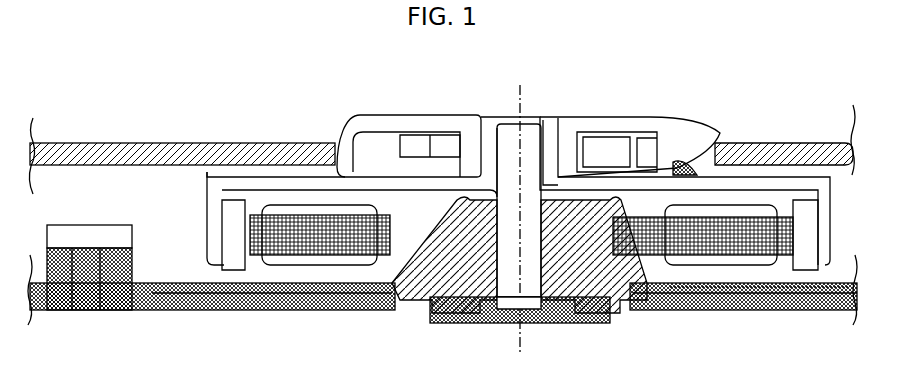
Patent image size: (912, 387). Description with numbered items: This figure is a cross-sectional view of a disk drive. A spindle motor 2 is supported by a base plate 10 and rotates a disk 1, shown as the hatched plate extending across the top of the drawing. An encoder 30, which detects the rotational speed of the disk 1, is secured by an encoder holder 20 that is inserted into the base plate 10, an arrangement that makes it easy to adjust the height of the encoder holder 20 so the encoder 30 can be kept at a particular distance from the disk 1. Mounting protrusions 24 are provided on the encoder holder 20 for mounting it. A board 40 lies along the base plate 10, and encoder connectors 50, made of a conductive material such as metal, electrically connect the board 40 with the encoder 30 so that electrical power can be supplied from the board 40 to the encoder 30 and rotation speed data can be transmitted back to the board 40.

The disk 1 is at (230, 128).
The spindle motor 2 is at (690, 95).
The base plate 10 is at (272, 312).
The encoder holder 20 is at (115, 300).
The mounting protrusions 24 is at (148, 305).
The encoder 30 is at (63, 227).
The board 40 is at (353, 312).
The encoder connectors 50 is at (85, 292).